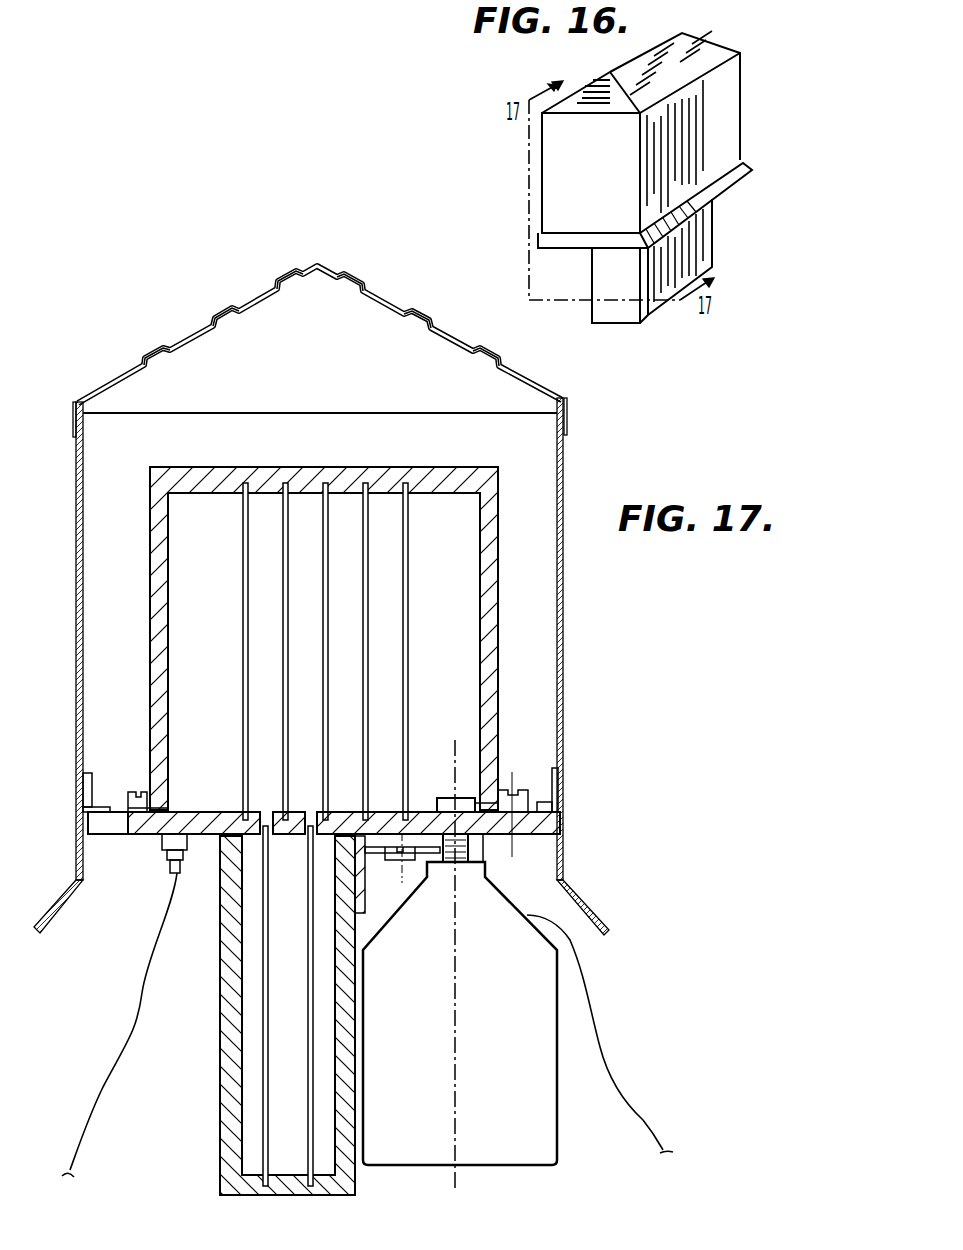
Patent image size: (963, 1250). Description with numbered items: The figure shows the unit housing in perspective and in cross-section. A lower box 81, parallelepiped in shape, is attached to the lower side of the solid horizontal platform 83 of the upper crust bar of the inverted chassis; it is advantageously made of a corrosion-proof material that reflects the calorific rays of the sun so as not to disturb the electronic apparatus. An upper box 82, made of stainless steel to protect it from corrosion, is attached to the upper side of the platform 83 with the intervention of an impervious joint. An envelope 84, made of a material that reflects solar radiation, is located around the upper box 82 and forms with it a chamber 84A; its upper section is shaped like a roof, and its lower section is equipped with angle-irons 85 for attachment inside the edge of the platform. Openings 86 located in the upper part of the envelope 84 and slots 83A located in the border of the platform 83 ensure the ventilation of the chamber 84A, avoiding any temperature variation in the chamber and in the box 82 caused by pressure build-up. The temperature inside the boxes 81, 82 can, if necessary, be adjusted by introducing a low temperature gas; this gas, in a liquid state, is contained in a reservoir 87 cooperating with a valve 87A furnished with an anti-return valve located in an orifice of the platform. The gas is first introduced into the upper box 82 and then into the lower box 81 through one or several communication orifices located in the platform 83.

In FIG. 16, the lower box 81 is at (687, 260).
In FIG. 17, the lower box 81 is at (223, 1133).
In FIG. 17, the upper box 82 is at (500, 630).
In FIG. 17, the horizontal platform 83 is at (210, 827).
In FIG. 17, the slots 83A is at (110, 828).
In FIG. 16, the envelope 84 is at (733, 137).
In FIG. 17, the envelope 84 is at (563, 490).
In FIG. 17, the chamber 84A is at (320, 428).
In FIG. 17, the angle-irons 85 is at (550, 770).
In FIG. 16, the openings 86 is at (583, 100).
In FIG. 17, the openings 86 is at (223, 312).
In FIG. 17, the reservoir 87 is at (434, 980).
In FIG. 17, the valve 87A is at (443, 798).